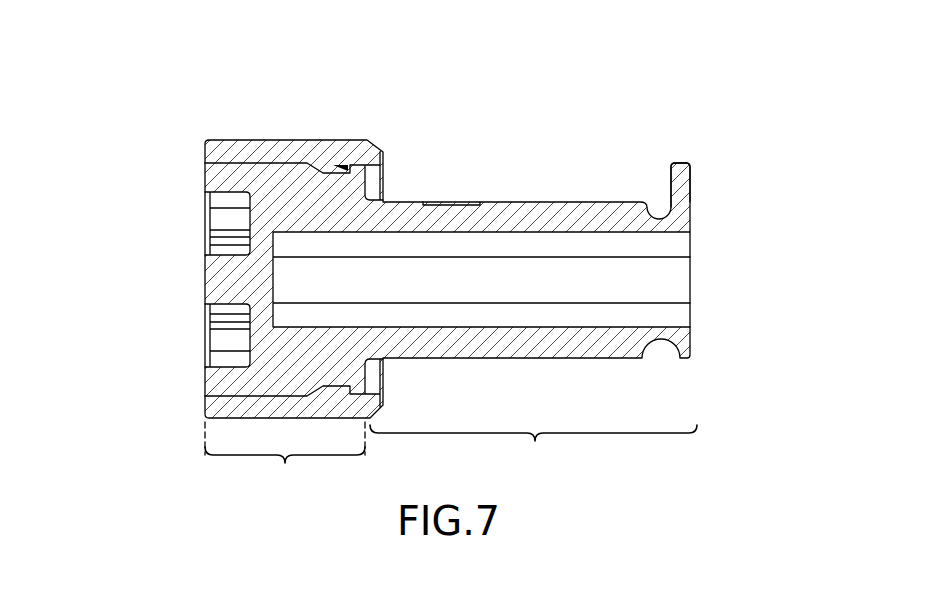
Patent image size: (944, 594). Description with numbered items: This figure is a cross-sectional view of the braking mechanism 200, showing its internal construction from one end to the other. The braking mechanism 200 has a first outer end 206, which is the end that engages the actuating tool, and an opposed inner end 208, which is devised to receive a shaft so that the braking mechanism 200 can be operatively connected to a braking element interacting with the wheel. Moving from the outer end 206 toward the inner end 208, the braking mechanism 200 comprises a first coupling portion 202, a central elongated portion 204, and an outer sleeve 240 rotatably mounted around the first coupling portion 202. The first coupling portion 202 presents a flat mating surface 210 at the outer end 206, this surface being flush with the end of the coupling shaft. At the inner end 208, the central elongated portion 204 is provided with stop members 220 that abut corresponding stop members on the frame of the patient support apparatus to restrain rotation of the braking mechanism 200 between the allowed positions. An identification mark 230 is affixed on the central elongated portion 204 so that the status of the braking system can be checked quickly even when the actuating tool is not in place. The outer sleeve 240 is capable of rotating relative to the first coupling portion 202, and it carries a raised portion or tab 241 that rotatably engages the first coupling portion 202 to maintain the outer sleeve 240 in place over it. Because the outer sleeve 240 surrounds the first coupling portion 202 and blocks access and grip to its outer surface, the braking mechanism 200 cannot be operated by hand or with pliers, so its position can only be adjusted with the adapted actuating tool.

The braking mechanism 200 is at (576, 135).
The first coupling portion 202 is at (285, 463).
The central elongated portion 204 is at (533, 454).
The first outer end 206 is at (127, 255).
The inner end 208 is at (722, 216).
The flat mating surface 210 is at (204, 175).
The stop members 220 is at (687, 178).
The identification mark 230 is at (447, 204).
The outer sleeve 240 is at (297, 138).
The tab 241 is at (345, 163).